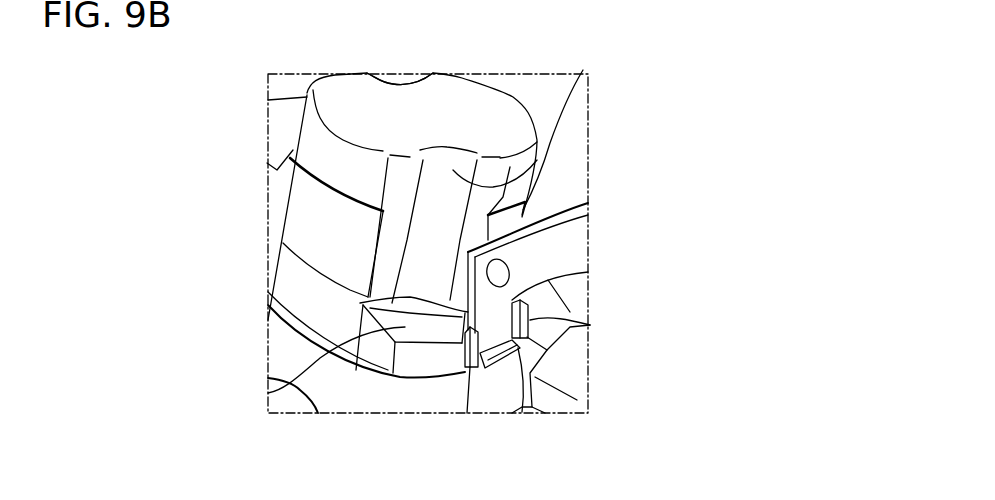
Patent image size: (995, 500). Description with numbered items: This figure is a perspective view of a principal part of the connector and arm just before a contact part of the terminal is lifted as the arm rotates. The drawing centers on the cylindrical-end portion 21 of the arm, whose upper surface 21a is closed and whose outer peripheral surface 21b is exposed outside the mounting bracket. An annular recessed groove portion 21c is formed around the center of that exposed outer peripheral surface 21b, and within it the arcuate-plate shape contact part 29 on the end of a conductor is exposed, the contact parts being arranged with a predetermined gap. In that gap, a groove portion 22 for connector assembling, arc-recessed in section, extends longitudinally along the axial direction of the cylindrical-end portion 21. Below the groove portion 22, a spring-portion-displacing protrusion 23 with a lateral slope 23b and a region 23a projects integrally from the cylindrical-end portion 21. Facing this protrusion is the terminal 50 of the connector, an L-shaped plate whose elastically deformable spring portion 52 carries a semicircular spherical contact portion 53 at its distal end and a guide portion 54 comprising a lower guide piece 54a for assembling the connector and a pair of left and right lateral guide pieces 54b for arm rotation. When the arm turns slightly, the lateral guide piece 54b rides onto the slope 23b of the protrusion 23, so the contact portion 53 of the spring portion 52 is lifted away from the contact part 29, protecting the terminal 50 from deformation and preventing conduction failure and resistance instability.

The cylindrical-end portion 21 is at (268, 313).
The upper surface 21a is at (468, 113).
The outer peripheral surface 21b is at (307, 137).
The annular recessed groove portion 21c is at (323, 275).
The groove portion for connector assembling 22 is at (413, 80).
The contact part 29 is at (312, 220).
The terminal 50 is at (565, 200).
The spring portion 52 is at (567, 240).
The contact portion 53 is at (497, 273).
The guide portion 54 is at (541, 351).
The lower guide piece 54a is at (528, 413).
The lateral guide piece 54b is at (530, 318).
The spring-portion-displacing protrusion 23 is at (418, 372).
The boss 23a is at (268, 391).
The slope 23b is at (374, 350).